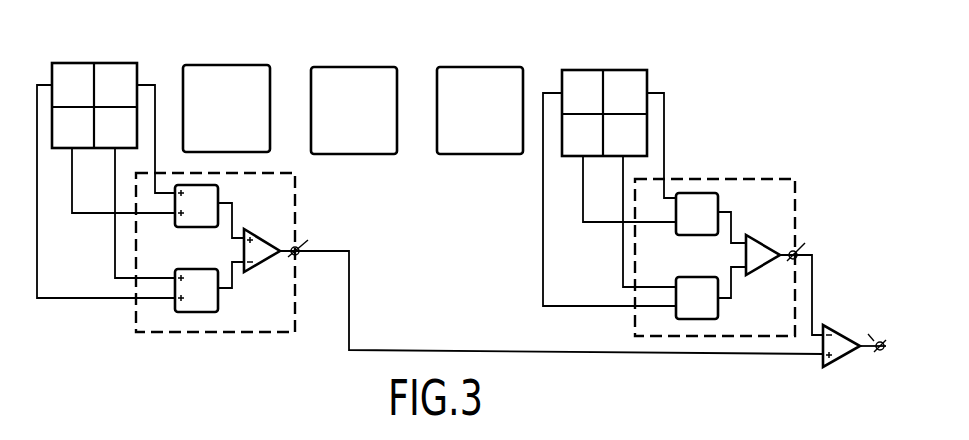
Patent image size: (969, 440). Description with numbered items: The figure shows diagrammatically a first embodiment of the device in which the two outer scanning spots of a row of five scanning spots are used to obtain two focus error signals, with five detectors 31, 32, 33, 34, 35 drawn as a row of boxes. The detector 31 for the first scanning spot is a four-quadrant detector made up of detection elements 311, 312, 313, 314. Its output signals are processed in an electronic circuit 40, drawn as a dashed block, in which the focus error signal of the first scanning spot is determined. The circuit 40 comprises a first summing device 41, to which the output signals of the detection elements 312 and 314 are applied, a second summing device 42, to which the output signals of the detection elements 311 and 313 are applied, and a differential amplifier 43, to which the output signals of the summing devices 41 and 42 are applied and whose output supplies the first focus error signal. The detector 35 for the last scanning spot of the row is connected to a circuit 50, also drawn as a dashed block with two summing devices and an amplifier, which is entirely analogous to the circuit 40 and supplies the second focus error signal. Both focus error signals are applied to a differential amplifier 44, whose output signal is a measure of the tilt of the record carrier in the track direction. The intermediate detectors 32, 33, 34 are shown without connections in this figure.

The detector 31 is at (106, 25).
The detection element 311 is at (70, 70).
The detection element 312 is at (120, 72).
The detection element 313 is at (108, 138).
The detection element 314 is at (65, 143).
The detector 32 is at (222, 72).
The detector 33 is at (351, 77).
The detector 34 is at (483, 77).
The detector 35 is at (603, 72).
The electronic circuit 40 is at (345, 201).
The first summing device 41 is at (220, 193).
The second summing device 42 is at (209, 313).
The differential amplifier 43 is at (275, 258).
The differential amplifier 44 is at (852, 360).
The circuit 50 is at (840, 200).